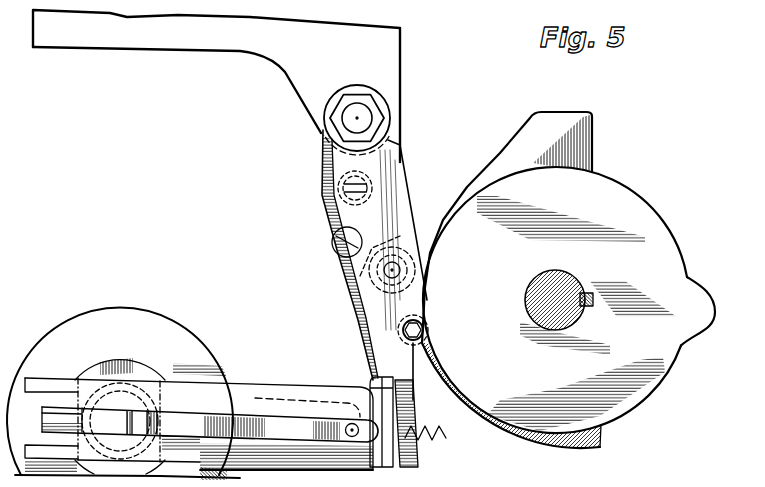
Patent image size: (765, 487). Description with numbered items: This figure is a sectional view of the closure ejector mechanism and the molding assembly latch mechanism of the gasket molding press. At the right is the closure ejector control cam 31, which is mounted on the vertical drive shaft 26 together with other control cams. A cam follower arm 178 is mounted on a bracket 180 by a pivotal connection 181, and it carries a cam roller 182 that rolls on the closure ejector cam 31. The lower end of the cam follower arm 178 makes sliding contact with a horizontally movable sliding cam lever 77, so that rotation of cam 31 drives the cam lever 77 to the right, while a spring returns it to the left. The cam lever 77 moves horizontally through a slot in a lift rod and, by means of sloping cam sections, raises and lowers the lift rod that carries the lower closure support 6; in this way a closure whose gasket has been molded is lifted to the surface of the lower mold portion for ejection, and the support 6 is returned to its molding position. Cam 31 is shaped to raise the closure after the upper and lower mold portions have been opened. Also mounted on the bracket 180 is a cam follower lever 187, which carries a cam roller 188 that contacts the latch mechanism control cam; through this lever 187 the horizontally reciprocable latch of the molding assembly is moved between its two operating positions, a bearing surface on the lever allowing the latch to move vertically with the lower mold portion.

The bracket 180 is at (390, 84).
The pivotal connection 181 is at (373, 118).
The cam follower arm 178 is at (400, 217).
The cam roller 188 is at (413, 250).
The cam roller 182 is at (430, 311).
The closure ejector control cam 31 is at (603, 183).
The vertical drive shaft 26 is at (573, 279).
The sliding cam lever 77 is at (243, 420).
The cam follower lever 187 is at (413, 469).
The lower closure support 6 is at (212, 483).